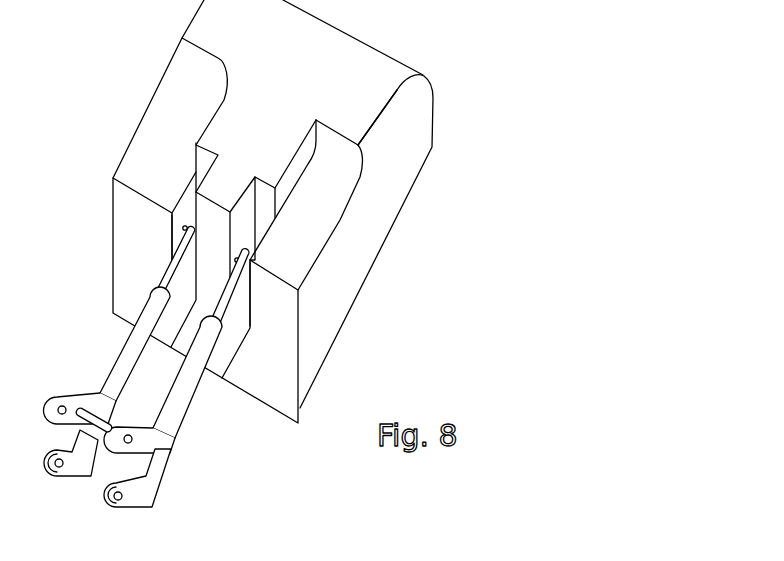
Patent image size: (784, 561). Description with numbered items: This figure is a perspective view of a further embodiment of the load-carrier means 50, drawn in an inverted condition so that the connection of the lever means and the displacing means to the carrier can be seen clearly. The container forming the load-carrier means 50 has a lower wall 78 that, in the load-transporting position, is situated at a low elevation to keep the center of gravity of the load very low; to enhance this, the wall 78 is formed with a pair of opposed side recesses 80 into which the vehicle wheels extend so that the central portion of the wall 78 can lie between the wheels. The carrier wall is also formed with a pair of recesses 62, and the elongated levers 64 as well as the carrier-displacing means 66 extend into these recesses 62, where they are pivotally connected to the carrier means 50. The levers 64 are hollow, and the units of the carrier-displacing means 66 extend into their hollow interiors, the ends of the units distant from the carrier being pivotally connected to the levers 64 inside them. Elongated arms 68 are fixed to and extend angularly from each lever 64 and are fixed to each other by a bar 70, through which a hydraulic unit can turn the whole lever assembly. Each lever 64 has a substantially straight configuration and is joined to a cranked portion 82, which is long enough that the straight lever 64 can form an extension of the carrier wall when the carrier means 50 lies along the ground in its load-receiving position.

The load-carrier means 50 is at (252, 274).
The lower wall 78 is at (279, 112).
The side recesses 80 is at (203, 64).
The recess 62 is at (177, 214).
The lever 64 is at (145, 362).
The carrier-displacing means 66 is at (152, 310).
The arms 68 is at (75, 405).
The bar 70 is at (93, 432).
The cranked portion 82 is at (67, 473).